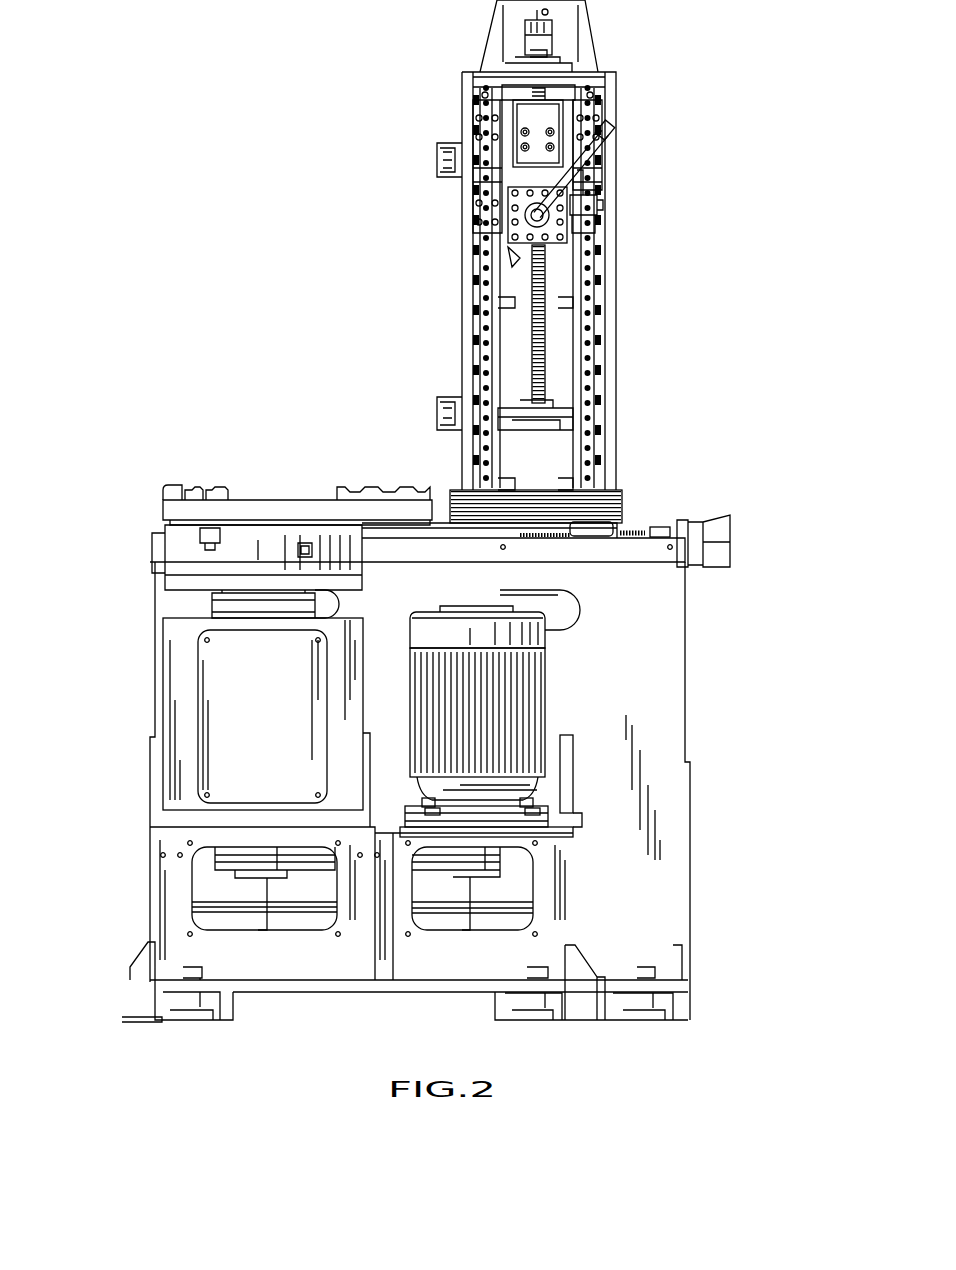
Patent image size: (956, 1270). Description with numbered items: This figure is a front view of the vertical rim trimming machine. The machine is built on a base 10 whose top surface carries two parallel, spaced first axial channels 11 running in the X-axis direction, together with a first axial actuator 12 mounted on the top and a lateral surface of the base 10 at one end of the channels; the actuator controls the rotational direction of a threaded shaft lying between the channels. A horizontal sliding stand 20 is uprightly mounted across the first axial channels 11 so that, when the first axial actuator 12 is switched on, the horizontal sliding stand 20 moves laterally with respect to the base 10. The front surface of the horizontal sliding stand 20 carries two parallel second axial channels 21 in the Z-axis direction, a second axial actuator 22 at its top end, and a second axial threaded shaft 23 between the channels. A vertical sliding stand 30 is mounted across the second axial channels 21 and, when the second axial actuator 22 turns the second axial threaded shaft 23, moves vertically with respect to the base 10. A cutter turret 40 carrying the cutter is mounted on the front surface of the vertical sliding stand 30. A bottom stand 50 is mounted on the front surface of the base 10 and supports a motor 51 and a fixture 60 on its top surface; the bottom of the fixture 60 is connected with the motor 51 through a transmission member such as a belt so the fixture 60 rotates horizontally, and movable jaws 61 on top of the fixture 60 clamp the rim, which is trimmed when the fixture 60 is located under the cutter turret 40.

The base 10 is at (457, 750).
The first axial channels 11 is at (637, 527).
The first axial actuator 12 is at (720, 527).
The horizontal sliding stand 20 is at (551, 261).
The second axial channels 21 is at (485, 345).
The second axial actuator 22 is at (548, 40).
The second axial threaded shaft 23 is at (540, 283).
The vertical sliding stand 30 is at (460, 205).
The cutter turret 40 is at (575, 232).
The bottom stand 50 is at (588, 889).
The motor 51 is at (540, 680).
The fixture 60 is at (266, 469).
The jaws 61 is at (215, 487).